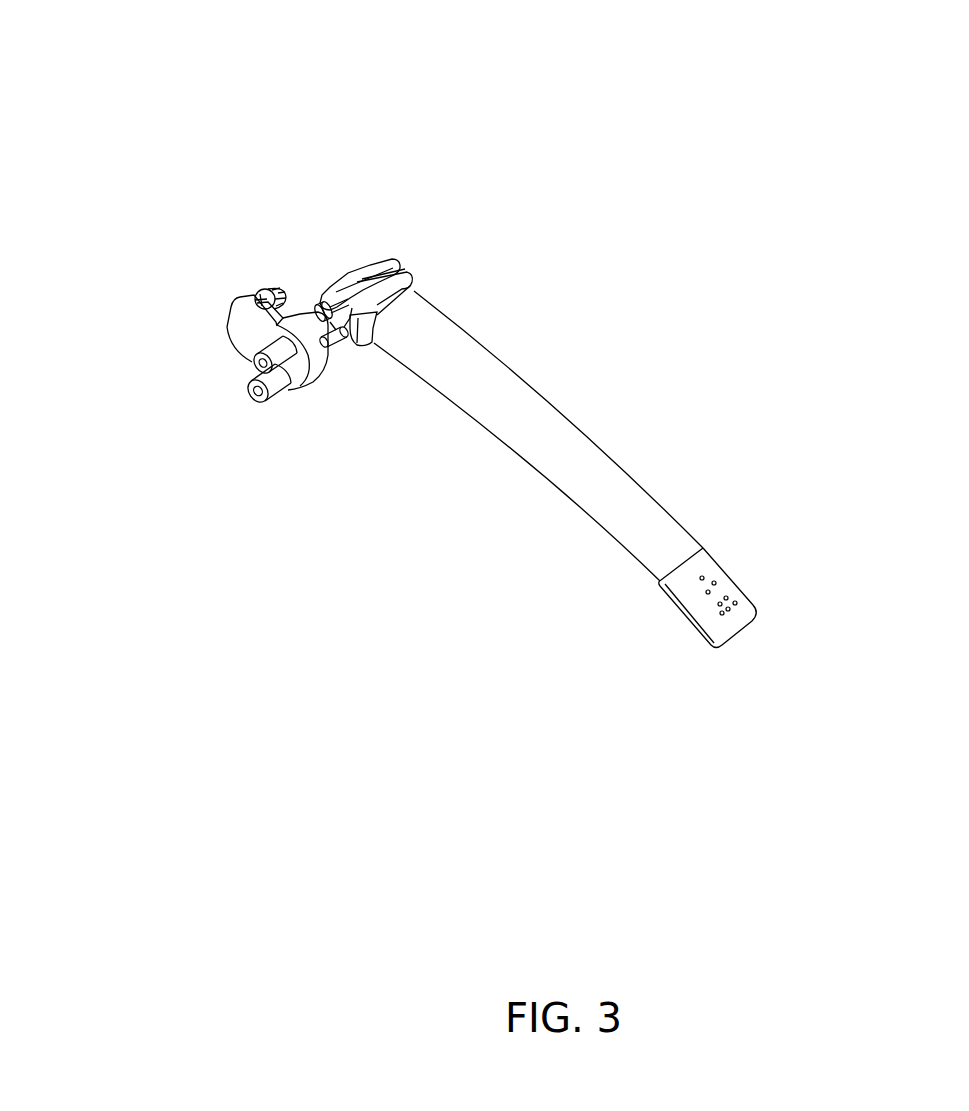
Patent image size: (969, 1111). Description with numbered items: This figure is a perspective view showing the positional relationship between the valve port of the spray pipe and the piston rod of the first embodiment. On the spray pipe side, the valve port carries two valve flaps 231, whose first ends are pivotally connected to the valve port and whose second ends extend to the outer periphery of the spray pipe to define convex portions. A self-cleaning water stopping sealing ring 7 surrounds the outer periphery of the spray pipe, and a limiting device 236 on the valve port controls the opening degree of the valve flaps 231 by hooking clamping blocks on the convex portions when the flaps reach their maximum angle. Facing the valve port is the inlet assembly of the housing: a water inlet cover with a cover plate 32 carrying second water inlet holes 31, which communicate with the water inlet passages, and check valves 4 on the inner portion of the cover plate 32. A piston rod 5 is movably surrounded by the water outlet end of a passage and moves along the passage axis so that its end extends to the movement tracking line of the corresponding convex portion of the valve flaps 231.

The check valve 4 is at (266, 284).
The piston rod 5 is at (333, 337).
The self-cleaning water stopping sealing ring 7 is at (398, 265).
The second water inlet hole 31 is at (282, 380).
The cover plate 32 is at (250, 340).
The valve flap 231 is at (367, 273).
The limiting device 236 is at (343, 310).